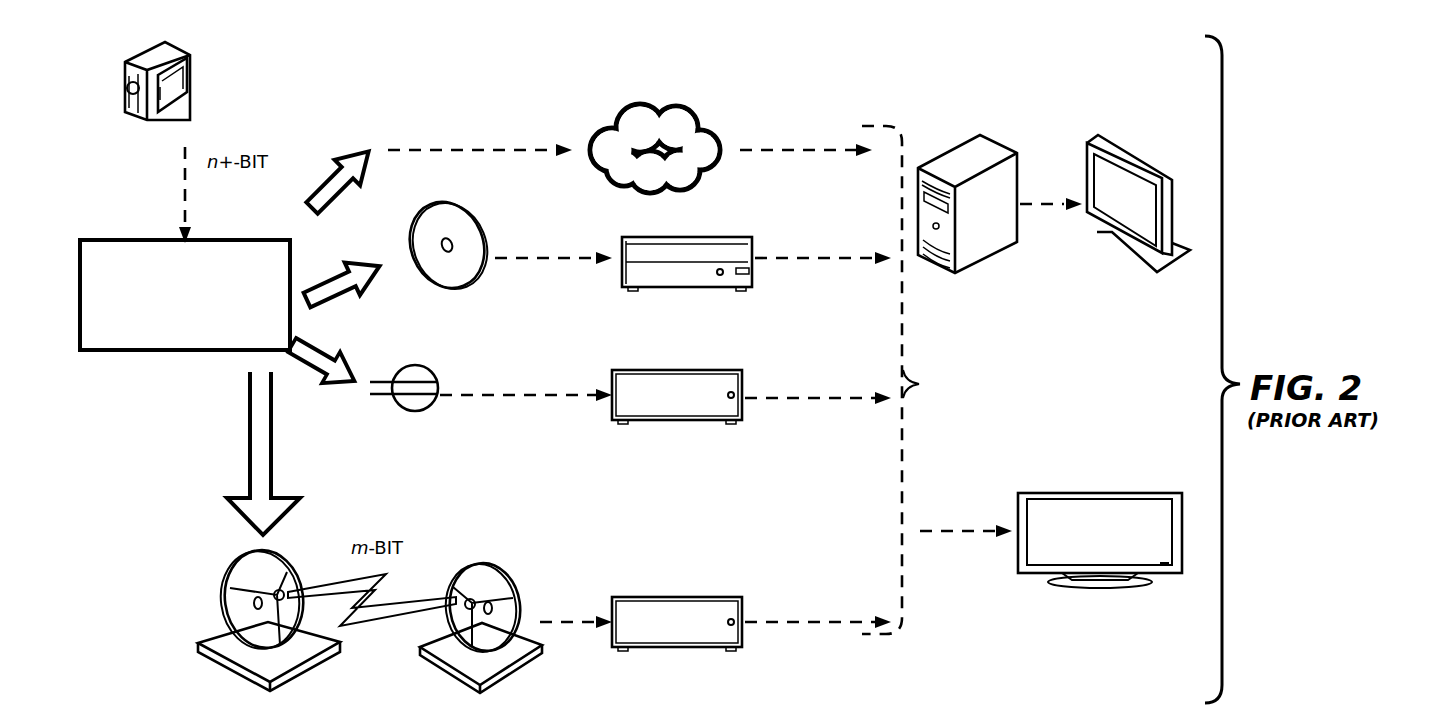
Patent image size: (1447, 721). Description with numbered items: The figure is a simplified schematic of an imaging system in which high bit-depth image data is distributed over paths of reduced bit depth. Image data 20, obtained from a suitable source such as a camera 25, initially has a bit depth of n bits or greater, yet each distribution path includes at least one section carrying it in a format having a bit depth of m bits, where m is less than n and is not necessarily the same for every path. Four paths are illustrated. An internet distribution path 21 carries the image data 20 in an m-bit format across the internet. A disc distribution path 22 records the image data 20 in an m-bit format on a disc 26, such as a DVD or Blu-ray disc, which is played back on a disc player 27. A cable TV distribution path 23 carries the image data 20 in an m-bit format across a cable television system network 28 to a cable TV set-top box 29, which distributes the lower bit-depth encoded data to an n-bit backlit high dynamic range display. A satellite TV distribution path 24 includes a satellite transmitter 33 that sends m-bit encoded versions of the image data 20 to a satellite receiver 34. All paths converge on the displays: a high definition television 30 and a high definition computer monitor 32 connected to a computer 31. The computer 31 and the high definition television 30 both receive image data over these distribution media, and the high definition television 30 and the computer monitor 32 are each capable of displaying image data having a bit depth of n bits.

The image data 20 is at (155, 352).
The internet distribution path 21 is at (362, 103).
The disc distribution path 22 is at (753, 205).
The cable TV distribution path 23 is at (462, 352).
The satellite TV distribution path 24 is at (753, 528).
The camera 25 is at (158, 122).
The disc 26 is at (455, 290).
The disc player 27 is at (675, 290).
The cable television system network 28 is at (402, 407).
The cable TV set-top box 29 is at (672, 423).
The high definition television 30 is at (1085, 492).
The computer 31 is at (953, 148).
The high definition computer monitor 32 is at (1125, 145).
The satellite transmitter 33 is at (222, 626).
The satellite receiver 34 is at (437, 662).